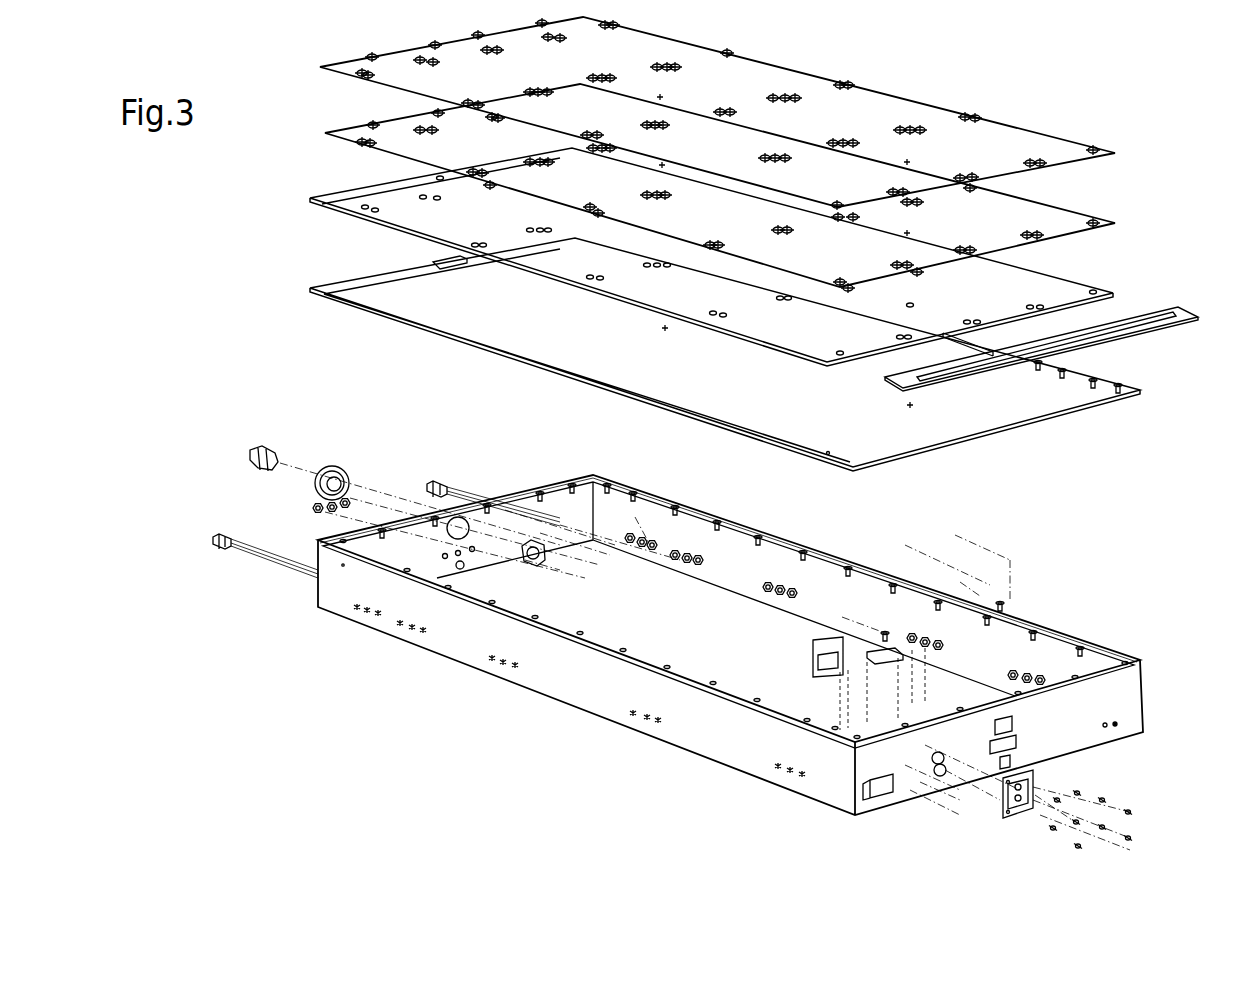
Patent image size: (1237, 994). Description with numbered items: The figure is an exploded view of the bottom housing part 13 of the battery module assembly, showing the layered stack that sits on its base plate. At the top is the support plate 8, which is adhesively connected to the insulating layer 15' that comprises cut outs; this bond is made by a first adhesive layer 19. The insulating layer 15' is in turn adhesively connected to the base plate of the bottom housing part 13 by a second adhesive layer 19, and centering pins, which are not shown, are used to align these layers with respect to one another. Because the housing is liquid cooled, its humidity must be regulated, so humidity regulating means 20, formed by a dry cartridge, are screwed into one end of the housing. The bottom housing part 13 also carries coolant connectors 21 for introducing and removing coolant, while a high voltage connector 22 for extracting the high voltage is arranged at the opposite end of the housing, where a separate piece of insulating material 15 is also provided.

The support plate 8 is at (1007, 137).
The adhesive layer 19 is at (1047, 213).
The insulating layer 15' is at (753, 257).
The separate piece of insulating material 15 is at (1052, 349).
The bottom housing part 13 is at (1127, 687).
The humidity regulating means 20 is at (255, 448).
The coolant connectors 21 is at (428, 480).
The high voltage connector 22 is at (1032, 780).